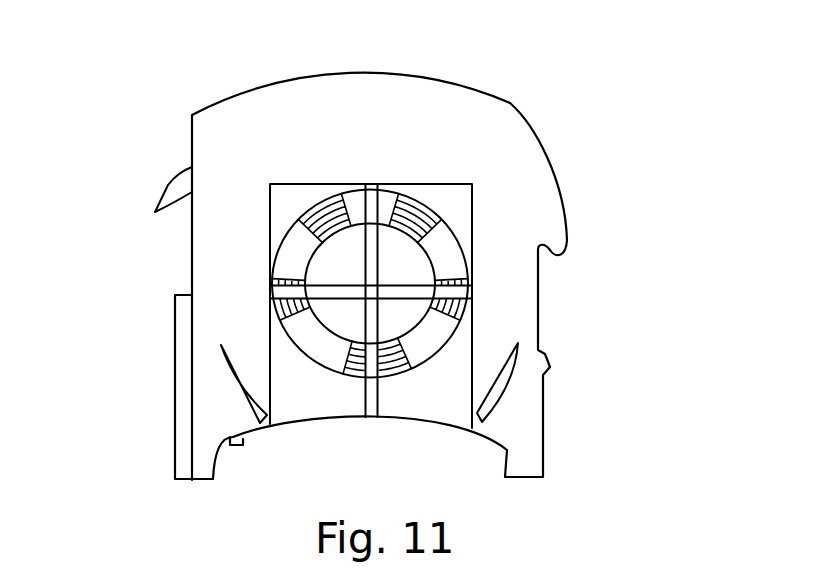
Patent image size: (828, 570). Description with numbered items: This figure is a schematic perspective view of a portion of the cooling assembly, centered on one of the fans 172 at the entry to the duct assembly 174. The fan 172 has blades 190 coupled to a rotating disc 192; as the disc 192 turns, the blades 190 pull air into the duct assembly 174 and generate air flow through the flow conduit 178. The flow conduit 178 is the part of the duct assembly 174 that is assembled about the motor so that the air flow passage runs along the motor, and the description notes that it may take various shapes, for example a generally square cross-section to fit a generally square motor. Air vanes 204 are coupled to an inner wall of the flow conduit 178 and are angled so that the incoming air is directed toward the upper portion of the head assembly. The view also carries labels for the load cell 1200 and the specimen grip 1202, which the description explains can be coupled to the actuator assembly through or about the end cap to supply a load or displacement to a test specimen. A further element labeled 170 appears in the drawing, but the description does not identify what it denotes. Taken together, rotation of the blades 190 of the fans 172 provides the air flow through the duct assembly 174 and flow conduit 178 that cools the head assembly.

The latch hook 170 is at (177, 185).
The fans 172 is at (480, 231).
The duct assembly 174 is at (418, 108).
The flow conduit 178 is at (285, 120).
The blades 190 is at (440, 223).
The rotating disc 192 is at (413, 367).
The air vanes 204 is at (228, 367).
The load cell 1200 is at (485, 283).
The specimen grip 1202 is at (363, 420).